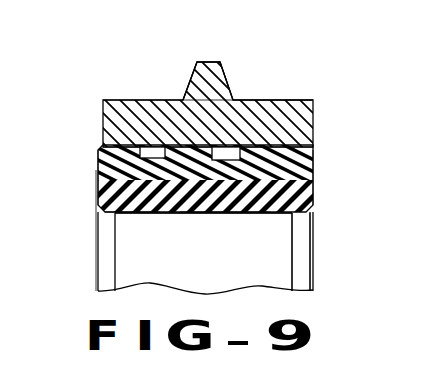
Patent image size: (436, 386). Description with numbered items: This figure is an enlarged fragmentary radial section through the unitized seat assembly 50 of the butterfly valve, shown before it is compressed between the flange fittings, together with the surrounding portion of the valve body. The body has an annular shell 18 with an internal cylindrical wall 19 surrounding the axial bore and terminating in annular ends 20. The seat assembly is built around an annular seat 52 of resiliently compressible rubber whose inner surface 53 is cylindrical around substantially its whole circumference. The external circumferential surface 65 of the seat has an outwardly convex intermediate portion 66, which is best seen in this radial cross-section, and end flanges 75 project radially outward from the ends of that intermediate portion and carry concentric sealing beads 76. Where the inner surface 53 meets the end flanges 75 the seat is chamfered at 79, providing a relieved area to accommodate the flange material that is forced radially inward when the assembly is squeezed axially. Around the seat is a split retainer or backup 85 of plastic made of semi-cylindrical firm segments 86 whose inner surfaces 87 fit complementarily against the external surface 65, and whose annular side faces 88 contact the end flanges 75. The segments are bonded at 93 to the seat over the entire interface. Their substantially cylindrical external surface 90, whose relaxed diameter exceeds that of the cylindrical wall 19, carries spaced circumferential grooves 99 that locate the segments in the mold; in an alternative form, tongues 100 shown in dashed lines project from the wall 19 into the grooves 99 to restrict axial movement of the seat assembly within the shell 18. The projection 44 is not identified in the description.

The annular shell 18 is at (150, 145).
The internal cylindrical wall 19 is at (313, 148).
The annular ends 20 is at (103, 105).
The projection 44 is at (208, 62).
The unitized seat assembly 50 is at (92, 277).
The annular seat 52 is at (313, 289).
The inner surface 53 is at (123, 212).
The external circumferential surface 65 is at (251, 212).
The outwardly convex intermediate portion 66 is at (222, 210).
The end flanges 75 is at (97, 193).
The concentric sealing beads 76 is at (100, 172).
The chamfer 79 is at (100, 210).
The split retainer or backup 85 is at (218, 145).
The semi-cylindrical firm segments 86 is at (181, 145).
The inner surfaces 87 is at (141, 213).
The annular side faces 88 is at (100, 146).
The external surface 90 is at (233, 147).
The bond 93 is at (193, 213).
The grooves 99 is at (146, 178).
The tongues 100 is at (139, 214).